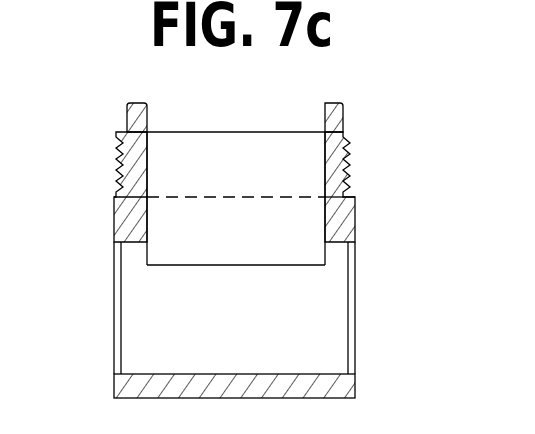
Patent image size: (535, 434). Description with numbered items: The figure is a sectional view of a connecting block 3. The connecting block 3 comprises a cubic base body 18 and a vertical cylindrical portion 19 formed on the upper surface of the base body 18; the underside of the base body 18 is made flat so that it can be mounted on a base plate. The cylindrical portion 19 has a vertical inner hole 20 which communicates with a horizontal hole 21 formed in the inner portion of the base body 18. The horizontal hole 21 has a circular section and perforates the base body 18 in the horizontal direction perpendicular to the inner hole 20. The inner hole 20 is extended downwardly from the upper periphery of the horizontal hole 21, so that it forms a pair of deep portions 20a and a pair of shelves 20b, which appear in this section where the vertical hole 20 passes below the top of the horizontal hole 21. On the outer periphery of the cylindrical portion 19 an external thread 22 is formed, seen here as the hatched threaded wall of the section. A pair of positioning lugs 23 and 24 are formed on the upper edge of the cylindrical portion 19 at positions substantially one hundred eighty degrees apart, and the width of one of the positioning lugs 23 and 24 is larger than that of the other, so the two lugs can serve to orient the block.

The connecting block 3 is at (113, 123).
The base body 18 is at (178, 402).
The cylindrical portion 19 is at (325, 148).
The inner hole 20 is at (198, 150).
The deep portion 20a is at (323, 243).
The shelf 20b is at (223, 265).
The horizontal hole 21 is at (133, 327).
The external thread 22 is at (351, 152).
The positioning lug 23 is at (138, 103).
The positioning lug 24 is at (343, 103).